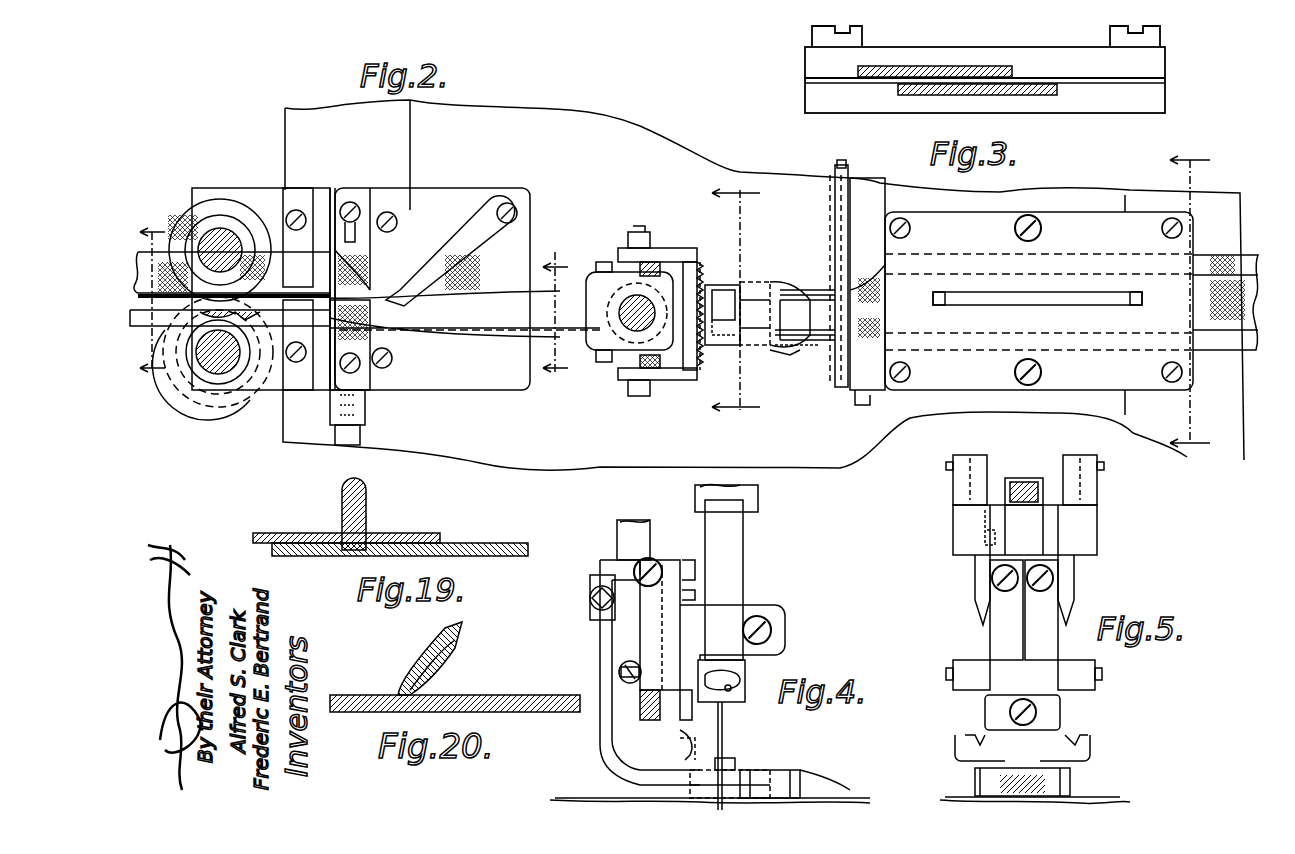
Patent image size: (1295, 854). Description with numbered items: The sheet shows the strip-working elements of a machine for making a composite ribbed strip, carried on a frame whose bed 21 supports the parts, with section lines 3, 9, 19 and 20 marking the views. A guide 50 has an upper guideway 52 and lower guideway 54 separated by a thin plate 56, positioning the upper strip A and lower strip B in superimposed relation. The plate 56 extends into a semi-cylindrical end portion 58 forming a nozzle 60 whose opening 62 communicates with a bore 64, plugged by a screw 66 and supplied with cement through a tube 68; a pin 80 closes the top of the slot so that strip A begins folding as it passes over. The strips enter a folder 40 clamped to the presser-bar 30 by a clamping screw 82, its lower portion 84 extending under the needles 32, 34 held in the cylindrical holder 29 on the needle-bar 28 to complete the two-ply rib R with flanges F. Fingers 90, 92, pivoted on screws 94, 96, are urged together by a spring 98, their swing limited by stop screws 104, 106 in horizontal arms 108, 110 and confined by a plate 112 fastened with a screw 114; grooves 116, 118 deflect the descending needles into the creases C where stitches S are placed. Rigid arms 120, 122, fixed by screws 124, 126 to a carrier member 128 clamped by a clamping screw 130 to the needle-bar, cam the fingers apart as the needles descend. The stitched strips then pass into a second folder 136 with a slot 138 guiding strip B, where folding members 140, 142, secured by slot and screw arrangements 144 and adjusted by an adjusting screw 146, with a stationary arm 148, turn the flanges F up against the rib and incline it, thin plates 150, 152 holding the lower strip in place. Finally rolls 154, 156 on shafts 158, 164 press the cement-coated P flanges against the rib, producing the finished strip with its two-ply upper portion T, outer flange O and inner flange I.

In FIG. 2, the bed 21 is at (630, 140).
In FIG. 4, the needle-bar 28 is at (732, 545).
In FIG. 5, the needle-bar 28 is at (1025, 485).
In FIG. 4, the cylindrical holder 29 is at (748, 668).
In FIG. 2, the presser-bar 30 is at (636, 313).
In FIG. 4, the presser-bar 30 is at (625, 535).
In FIG. 5, the presser-bar 30 is at (1015, 478).
In FIG. 4, the needle 32 is at (695, 748).
In FIG. 4, the needle 34 is at (725, 735).
In FIG. 2, the folder 40 is at (600, 338).
In FIG. 4, the folder 40 is at (600, 655).
In FIG. 2, the guide 50 is at (1185, 248).
In FIG. 3, the guide 50 is at (1160, 66).
In FIG. 3, the upper guideway 52 is at (972, 66).
In FIG. 3, the lower guideway 54 is at (1030, 96).
In FIG. 2, the plate 56 is at (864, 225).
In FIG. 3, the plate 56 is at (1150, 80).
In FIG. 2, the semi-cylindrical end portion 58 is at (830, 250).
In FIG. 2, the nozzle 60 is at (790, 280).
In FIG. 2, the opening 62 is at (822, 345).
In FIG. 2, the bore 64 is at (890, 280).
In FIG. 2, the screw 66 is at (875, 403).
In FIG. 2, the tube 68 is at (836, 178).
In FIG. 2, the pin 80 is at (770, 350).
In FIG. 2, the clamping screw 82 is at (604, 365).
In FIG. 4, the clamping screw 82 is at (590, 596).
In FIG. 2, the lower portion of folder 84 is at (755, 282).
In FIG. 4, the lower portion of folder 84 is at (770, 768).
In FIG. 5, the lower portion of folder 84 is at (1050, 775).
In FIG. 2, the finger 90 is at (703, 372).
In FIG. 4, the finger 90 is at (695, 770).
In FIG. 5, the finger 90 is at (1005, 640).
In FIG. 2, the finger 92 is at (705, 285).
In FIG. 4, the finger 92 is at (735, 762).
In FIG. 5, the finger 92 is at (1040, 640).
In FIG. 4, the screw 94 is at (700, 568).
In FIG. 5, the screw 94 is at (1008, 590).
In FIG. 5, the screw 96 is at (1040, 590).
In FIG. 4, the spring 98 is at (675, 740).
In FIG. 5, the spring 98 is at (1080, 735).
In FIG. 2, the stop screw 104 is at (640, 398).
In FIG. 4, the stop screw 104 is at (660, 700).
In FIG. 5, the stop screw 104 is at (948, 675).
In FIG. 2, the stop screw 106 is at (640, 230).
In FIG. 5, the stop screw 106 is at (1095, 675).
In FIG. 2, the horizontal arm 108 is at (665, 382).
In FIG. 4, the horizontal arm 108 is at (650, 668).
In FIG. 2, the horizontal arm 110 is at (665, 262).
In FIG. 4, the plate 112 is at (680, 705).
In FIG. 5, the plate 112 is at (1060, 712).
In FIG. 5, the screw 114 is at (1005, 708).
In FIG. 2, the semi-circular groove 116 is at (718, 350).
In FIG. 2, the semi-circular groove 118 is at (723, 290).
In FIG. 2, the rigid arm 120 is at (683, 370).
In FIG. 4, the rigid arm 120 is at (650, 628).
In FIG. 5, the rigid arm 120 is at (977, 576).
In FIG. 5, the rigid arm 122 is at (1066, 576).
In FIG. 4, the screw 124 is at (655, 562).
In FIG. 5, the screw 124 is at (946, 488).
In FIG. 5, the screw 126 is at (1100, 482).
In FIG. 4, the carrier member 128 is at (770, 612).
In FIG. 5, the carrier member 128 is at (1085, 530).
In FIG. 4, the clamping screw 130 is at (772, 634).
In FIG. 5, the clamping screw 130 is at (985, 540).
In FIG. 2, the second folder 136 is at (470, 378).
In FIG. 2, the slot 138 is at (530, 222).
In FIG. 2, the folding member 140 is at (372, 338).
In FIG. 2, the folding member 142 is at (385, 258).
In FIG. 2, the slot and screw arrangement 144 is at (350, 200).
In FIG. 2, the adjusting screw 146 is at (358, 438).
In FIG. 2, the stationary arm 148 is at (435, 262).
In FIG. 2, the thin plate 150 is at (293, 378).
In FIG. 2, the thin plate 152 is at (297, 197).
In FIG. 2, the rib-shaping and setting roll 154 is at (248, 392).
In FIG. 2, the rib-shaping and setting roll 156 is at (196, 210).
In FIG. 2, the vertical shaft 158 is at (210, 370).
In FIG. 2, the shaft 164 is at (235, 245).
In FIG. 2, the section line 3- 3 is at (1198, 301).
In FIG. 2, the section line 9- 9 is at (744, 301).
In FIG. 2, the section line 19- 19 is at (554, 314).
In FIG. 2, the section line 20- 20 is at (151, 302).
In FIG. 2, the upper strip A is at (1248, 275).
In FIG. 3, the upper strip A is at (910, 66).
In FIG. 4, the upper strip A is at (825, 768).
In FIG. 5, the upper strip A is at (960, 800).
In FIG. 19, the upper strip A is at (258, 535).
In FIG. 2, the lower strip B is at (160, 270).
In FIG. 3, the lower strip B is at (925, 95).
In FIG. 4, the lower strip B is at (855, 790).
In FIG. 5, the lower strip B is at (1085, 800).
In FIG. 19, the lower strip B is at (275, 548).
In FIG. 20, the lower strip B is at (532, 712).
In FIG. 2, the rib R is at (148, 302).
In FIG. 4, the rib R is at (585, 770).
In FIG. 5, the rib R is at (985, 775).
In FIG. 19, the rib R is at (368, 510).
In FIG. 20, the rib R is at (458, 658).
In FIG. 2, the stitches S is at (560, 300).
In FIG. 19, the stitches S is at (330, 538).
In FIG. 20, the stitches S is at (398, 690).
In FIG. 2, the flanges F is at (560, 288).
In FIG. 19, the flanges F is at (268, 532).
In FIG. 20, the flanges F is at (420, 660).
In FIG. 19, the creases C is at (342, 535).
In FIG. 19, the cement P is at (400, 540).
In FIG. 20, the cement P is at (370, 712).
In FIG. 20, the two-ply upper portion T is at (462, 628).
In FIG. 20, the inner flange I is at (470, 700).
In FIG. 20, the outer flange O is at (340, 712).